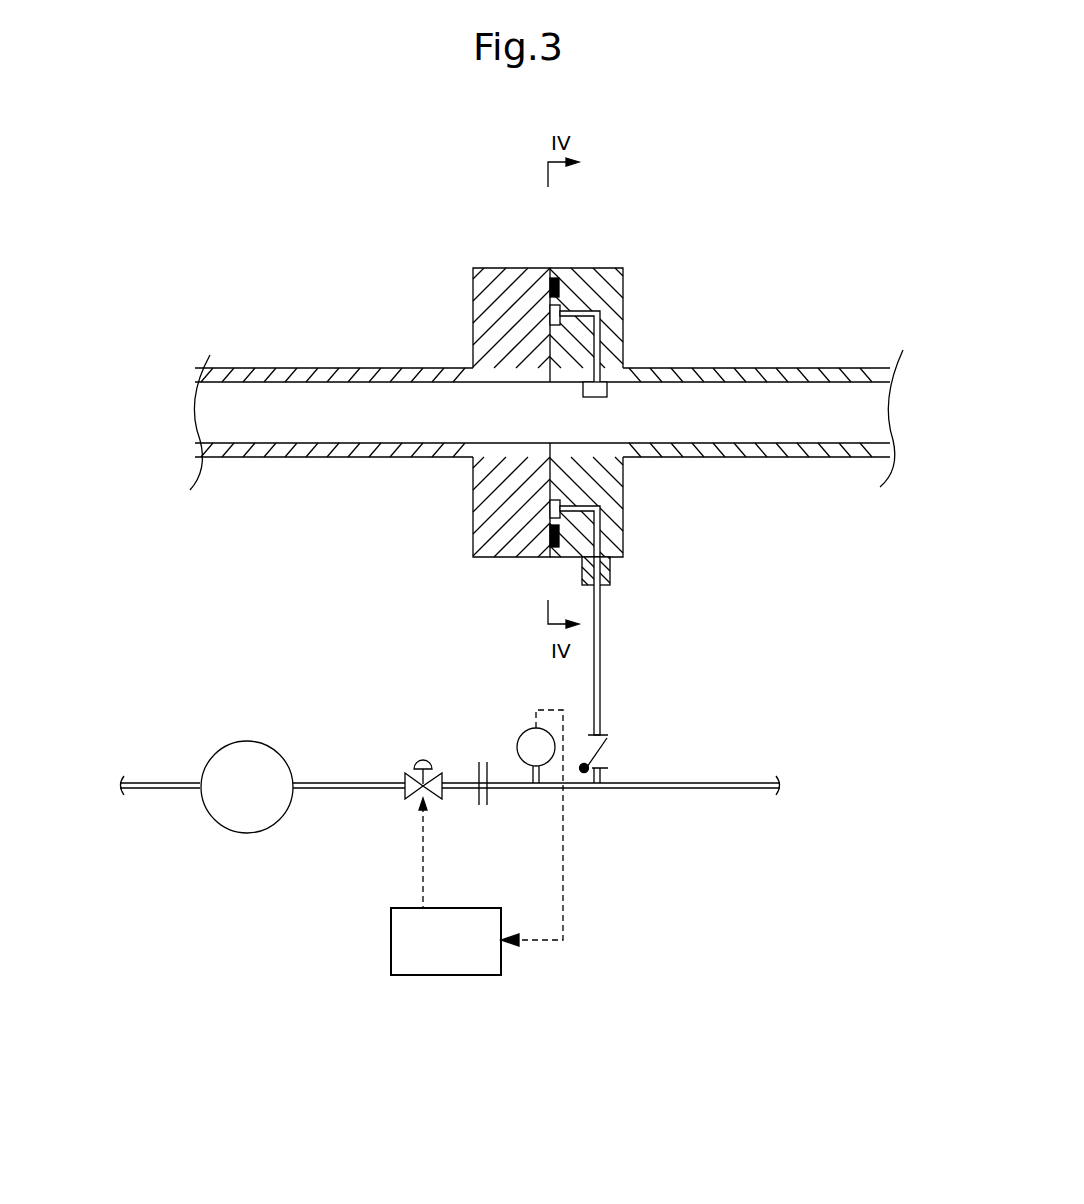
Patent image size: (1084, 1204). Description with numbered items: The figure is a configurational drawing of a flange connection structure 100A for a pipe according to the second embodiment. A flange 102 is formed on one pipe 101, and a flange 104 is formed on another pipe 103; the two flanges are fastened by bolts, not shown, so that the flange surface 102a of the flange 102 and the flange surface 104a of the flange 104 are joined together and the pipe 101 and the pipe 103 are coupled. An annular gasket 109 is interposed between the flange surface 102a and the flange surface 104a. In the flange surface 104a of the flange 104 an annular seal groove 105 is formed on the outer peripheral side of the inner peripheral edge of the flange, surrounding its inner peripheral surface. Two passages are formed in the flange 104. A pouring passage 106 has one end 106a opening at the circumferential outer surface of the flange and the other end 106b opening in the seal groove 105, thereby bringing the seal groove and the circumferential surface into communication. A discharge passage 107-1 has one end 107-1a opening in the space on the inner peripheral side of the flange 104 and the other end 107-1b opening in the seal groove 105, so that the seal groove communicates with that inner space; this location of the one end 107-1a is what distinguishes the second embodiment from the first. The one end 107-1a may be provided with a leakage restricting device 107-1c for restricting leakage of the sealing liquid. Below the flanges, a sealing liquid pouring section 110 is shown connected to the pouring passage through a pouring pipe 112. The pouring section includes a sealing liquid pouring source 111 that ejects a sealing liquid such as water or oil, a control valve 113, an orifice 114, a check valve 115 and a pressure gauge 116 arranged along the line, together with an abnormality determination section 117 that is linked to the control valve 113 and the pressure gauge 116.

The flange connection structure 100A is at (236, 223).
The pipe 101 is at (228, 458).
The flange 102 is at (472, 548).
The flange surface 102a is at (565, 383).
The pipe 103 is at (850, 450).
The flange 104 is at (613, 510).
The flange surface 104a is at (533, 443).
The seal groove 105 is at (552, 316).
The pouring passage 106 is at (610, 560).
The one end of pouring passage 106a is at (602, 588).
The other end of pouring passage 106b is at (565, 497).
The discharge passage 107-1 is at (622, 360).
The one end of discharge passage 107-1a is at (623, 384).
The other end of discharge passage 107-1b is at (567, 307).
The leakage restricting device 107-1c is at (597, 400).
The annular gasket 109 is at (548, 284).
The sealing liquid pouring section 110 is at (216, 884).
The sealing liquid pouring source 111 is at (235, 758).
The pouring pipe 112 is at (600, 682).
The control valve 113 is at (408, 795).
The orifice 114 is at (480, 805).
The check valve 115 is at (608, 752).
The pressure gauge 116 is at (520, 737).
The abnormality determination section 117 is at (425, 975).